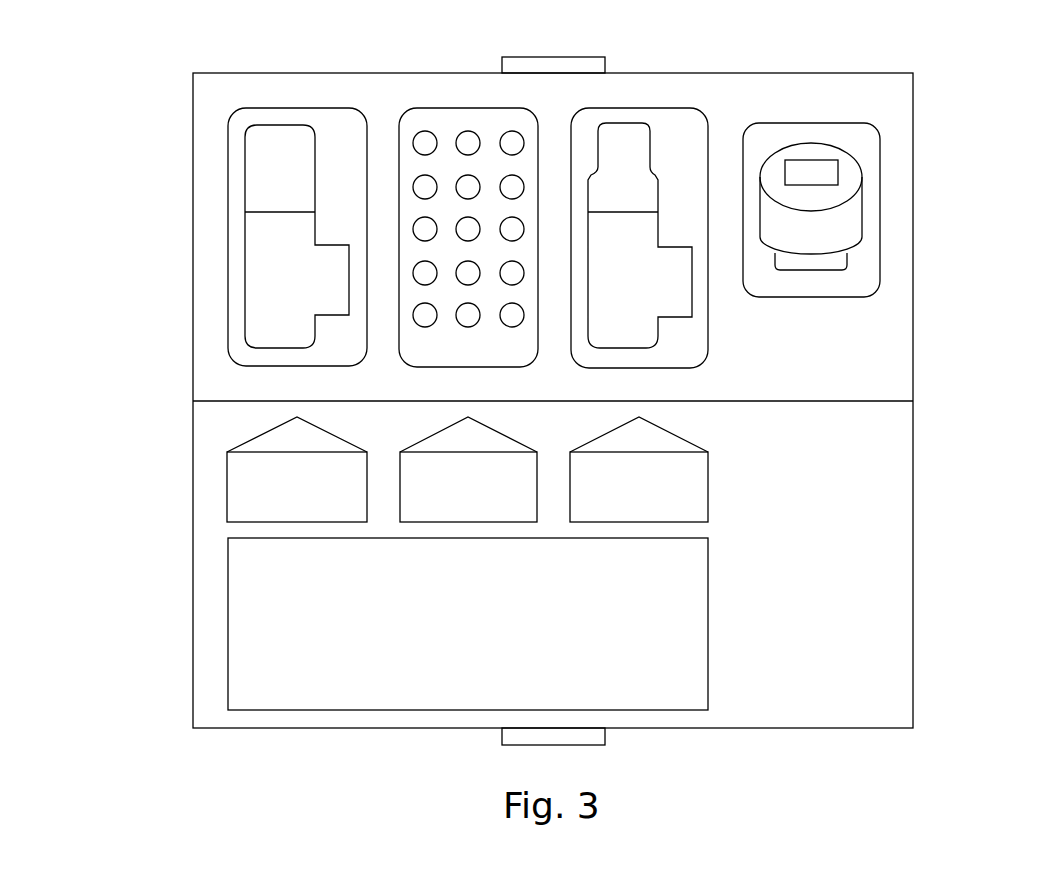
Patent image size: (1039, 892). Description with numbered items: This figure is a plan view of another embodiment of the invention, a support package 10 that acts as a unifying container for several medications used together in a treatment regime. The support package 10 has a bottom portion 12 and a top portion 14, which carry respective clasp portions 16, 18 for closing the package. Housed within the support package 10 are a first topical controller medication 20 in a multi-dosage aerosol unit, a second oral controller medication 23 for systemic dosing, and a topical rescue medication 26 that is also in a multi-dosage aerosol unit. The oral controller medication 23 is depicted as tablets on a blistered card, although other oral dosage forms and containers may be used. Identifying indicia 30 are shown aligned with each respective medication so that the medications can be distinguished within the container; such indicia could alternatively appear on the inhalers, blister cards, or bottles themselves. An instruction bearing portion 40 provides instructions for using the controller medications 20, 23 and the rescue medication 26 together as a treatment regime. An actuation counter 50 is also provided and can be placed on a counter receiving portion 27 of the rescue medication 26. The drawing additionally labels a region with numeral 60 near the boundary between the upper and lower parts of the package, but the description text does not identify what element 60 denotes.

The support package 10 is at (128, 88).
The bottom portion 12 is at (194, 432).
The top portion 14 is at (194, 308).
The clasp portion 16 is at (525, 746).
The clasp portion 18 is at (553, 57).
The first topical controller medication 20 is at (245, 183).
The second oral controller medication 23 is at (433, 105).
The topical rescue medication 26 is at (658, 222).
The counter receiving portion 27 is at (586, 146).
The identifying indicia 30 is at (215, 492).
The instruction bearing portion 40 is at (228, 642).
The actuation counter 50 is at (862, 178).
The divider panel 60 is at (823, 402).